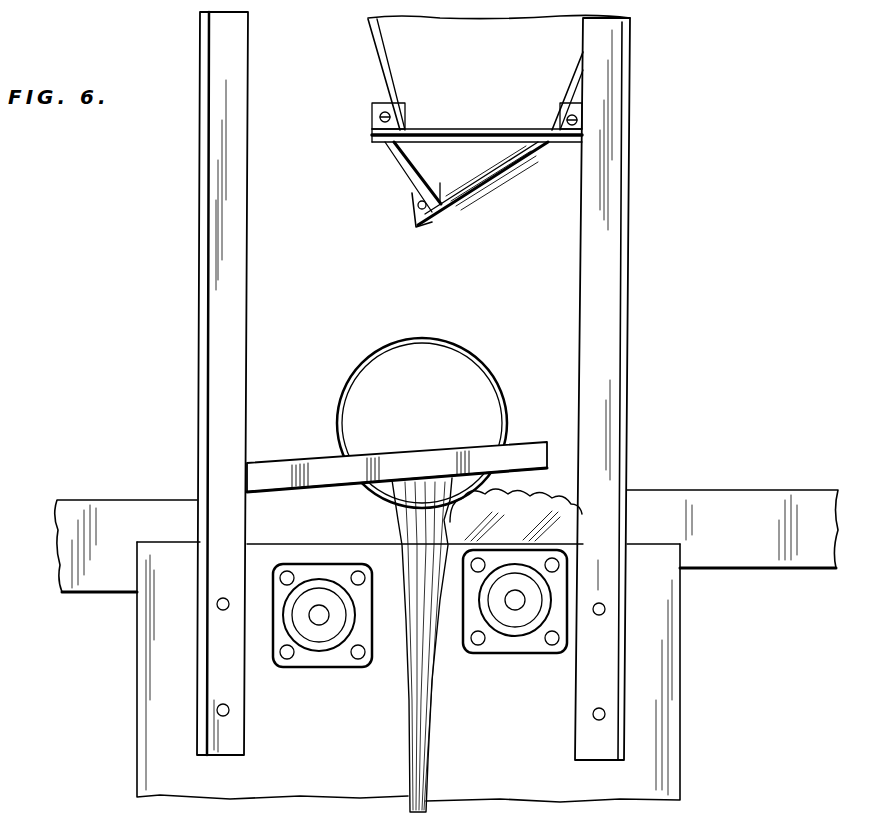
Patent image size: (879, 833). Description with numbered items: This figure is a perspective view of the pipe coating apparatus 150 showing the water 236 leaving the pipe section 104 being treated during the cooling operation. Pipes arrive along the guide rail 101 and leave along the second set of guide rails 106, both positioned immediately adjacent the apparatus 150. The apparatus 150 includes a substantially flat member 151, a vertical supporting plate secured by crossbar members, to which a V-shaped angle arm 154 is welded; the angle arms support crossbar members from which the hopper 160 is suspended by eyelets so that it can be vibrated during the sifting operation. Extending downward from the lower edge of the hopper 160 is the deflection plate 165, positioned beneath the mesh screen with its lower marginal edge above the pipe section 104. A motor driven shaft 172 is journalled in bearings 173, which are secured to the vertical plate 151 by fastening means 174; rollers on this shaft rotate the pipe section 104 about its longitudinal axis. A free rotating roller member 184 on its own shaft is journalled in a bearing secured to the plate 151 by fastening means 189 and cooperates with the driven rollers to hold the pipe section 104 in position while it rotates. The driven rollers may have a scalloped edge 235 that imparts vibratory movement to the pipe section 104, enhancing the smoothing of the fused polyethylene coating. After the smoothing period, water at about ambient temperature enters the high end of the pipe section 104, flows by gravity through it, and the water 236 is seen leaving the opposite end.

The guide rail 101 is at (760, 478).
The pipe section 104 is at (452, 333).
The second set of guide rails 106 is at (116, 515).
The pipe coating apparatus 150 is at (657, 308).
The substantially flat member 151 is at (320, 756).
The V-shaped angle arm 154 is at (200, 272).
The hopper 160 is at (504, 84).
The deflection plate 165 is at (473, 192).
The motor driven shaft 172 is at (518, 610).
The bearing 173 is at (500, 645).
The fastening means 174 is at (473, 644).
The free rotating roller member 184 is at (313, 660).
The fastening means 189 is at (280, 582).
The scalloped edge 235 is at (578, 493).
The water 236 is at (397, 523).